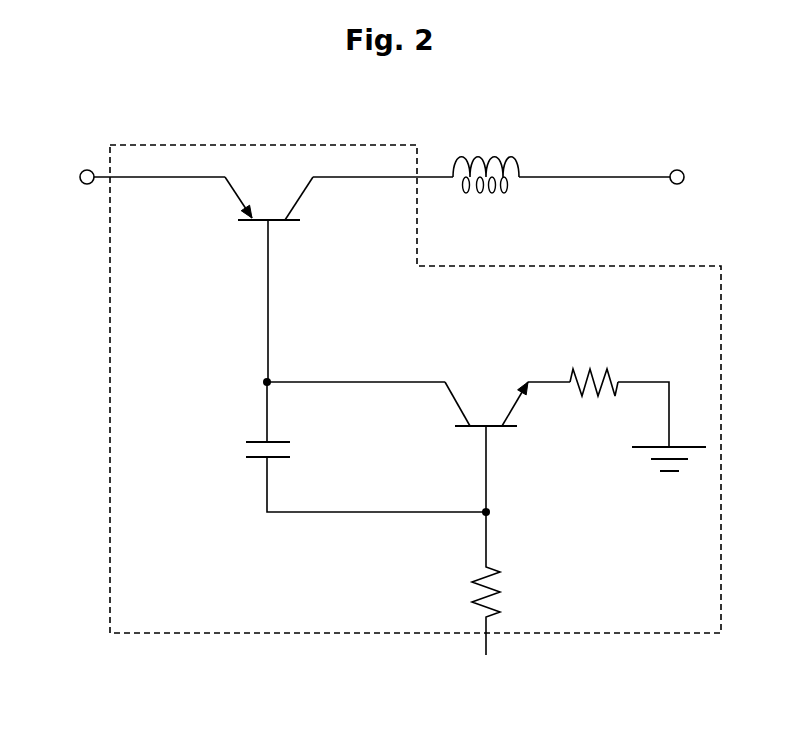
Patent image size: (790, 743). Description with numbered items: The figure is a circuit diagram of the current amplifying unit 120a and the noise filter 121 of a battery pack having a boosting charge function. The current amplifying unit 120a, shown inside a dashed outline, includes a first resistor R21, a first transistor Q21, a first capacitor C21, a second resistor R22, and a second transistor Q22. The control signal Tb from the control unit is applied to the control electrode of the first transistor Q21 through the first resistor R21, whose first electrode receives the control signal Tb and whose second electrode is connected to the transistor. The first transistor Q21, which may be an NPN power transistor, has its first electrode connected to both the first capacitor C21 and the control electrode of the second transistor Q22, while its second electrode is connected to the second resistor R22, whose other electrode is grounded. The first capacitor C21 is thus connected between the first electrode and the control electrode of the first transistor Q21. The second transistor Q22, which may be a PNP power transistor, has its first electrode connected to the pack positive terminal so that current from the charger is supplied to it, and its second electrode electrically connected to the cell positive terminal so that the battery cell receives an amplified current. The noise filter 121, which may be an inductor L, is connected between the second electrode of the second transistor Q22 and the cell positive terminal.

The current amplifying unit 120a is at (265, 145).
The noise filter 121 is at (526, 174).
The inductor L is at (494, 207).
The second transistor Q22 is at (243, 208).
The first transistor Q21 is at (465, 447).
The first capacitor C21 is at (237, 452).
The second resistor R22 is at (594, 362).
The first resistor R21 is at (514, 583).
The control signal Tb is at (483, 679).